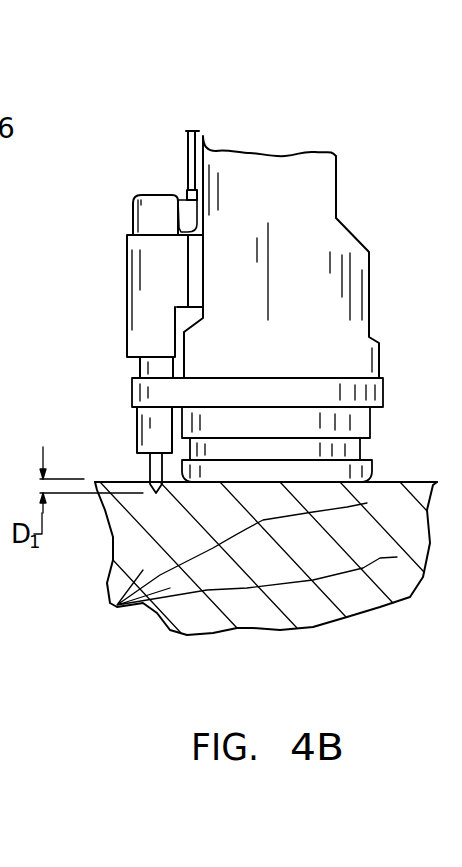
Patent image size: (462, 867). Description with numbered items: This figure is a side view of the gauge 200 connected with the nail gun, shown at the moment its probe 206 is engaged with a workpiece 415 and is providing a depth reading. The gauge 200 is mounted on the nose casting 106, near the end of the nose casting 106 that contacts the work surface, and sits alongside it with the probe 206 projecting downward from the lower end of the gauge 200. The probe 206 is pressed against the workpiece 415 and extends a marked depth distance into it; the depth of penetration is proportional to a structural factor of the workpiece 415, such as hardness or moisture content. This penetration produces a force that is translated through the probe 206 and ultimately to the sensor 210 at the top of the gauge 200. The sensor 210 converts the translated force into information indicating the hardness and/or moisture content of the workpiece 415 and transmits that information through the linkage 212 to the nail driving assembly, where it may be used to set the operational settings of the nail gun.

The nose casting 106 is at (327, 248).
The gauge 200 is at (117, 283).
The sensor 210 is at (160, 215).
The linkage 212 is at (188, 175).
The probe 206 is at (152, 472).
The workpiece 415 is at (167, 588).